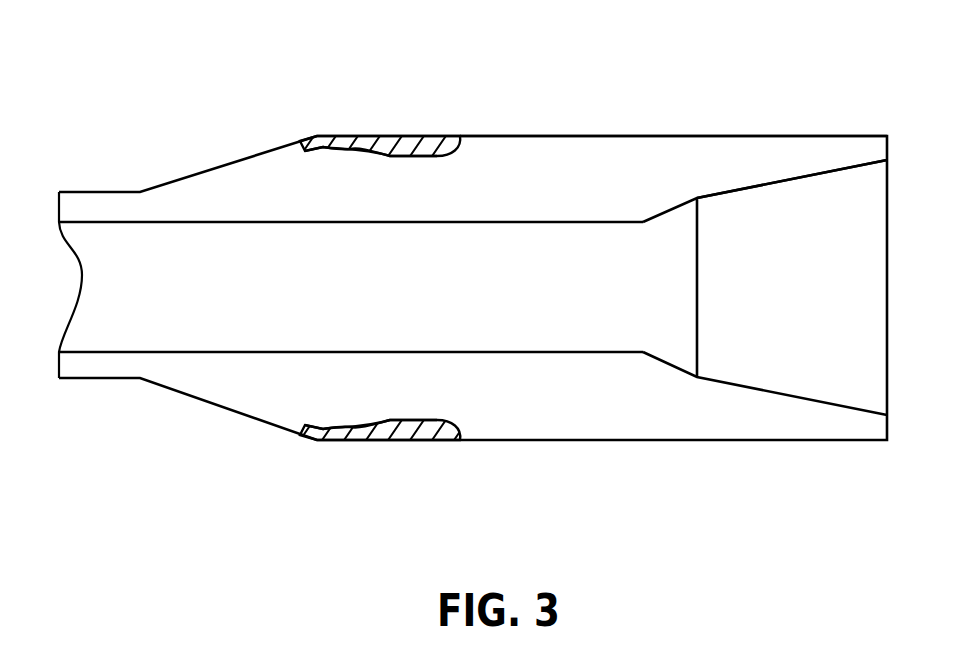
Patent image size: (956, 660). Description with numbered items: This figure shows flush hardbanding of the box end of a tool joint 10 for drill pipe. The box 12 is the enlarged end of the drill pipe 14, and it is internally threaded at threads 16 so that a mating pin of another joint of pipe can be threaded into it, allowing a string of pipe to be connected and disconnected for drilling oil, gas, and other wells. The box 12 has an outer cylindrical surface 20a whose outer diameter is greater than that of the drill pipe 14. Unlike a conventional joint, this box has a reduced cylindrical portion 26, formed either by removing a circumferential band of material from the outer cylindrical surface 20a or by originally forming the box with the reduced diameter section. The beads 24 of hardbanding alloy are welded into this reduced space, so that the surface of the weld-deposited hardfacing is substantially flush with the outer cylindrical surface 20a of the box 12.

The tool joint 10 is at (700, 131).
The box 12 is at (672, 415).
The drill pipe 14 is at (105, 378).
The internal threads 16 is at (753, 190).
The outer cylindrical surface 20a is at (533, 136).
The beads of hardbanding alloy 24 is at (383, 136).
The reduced cylindrical portion 26 is at (398, 155).